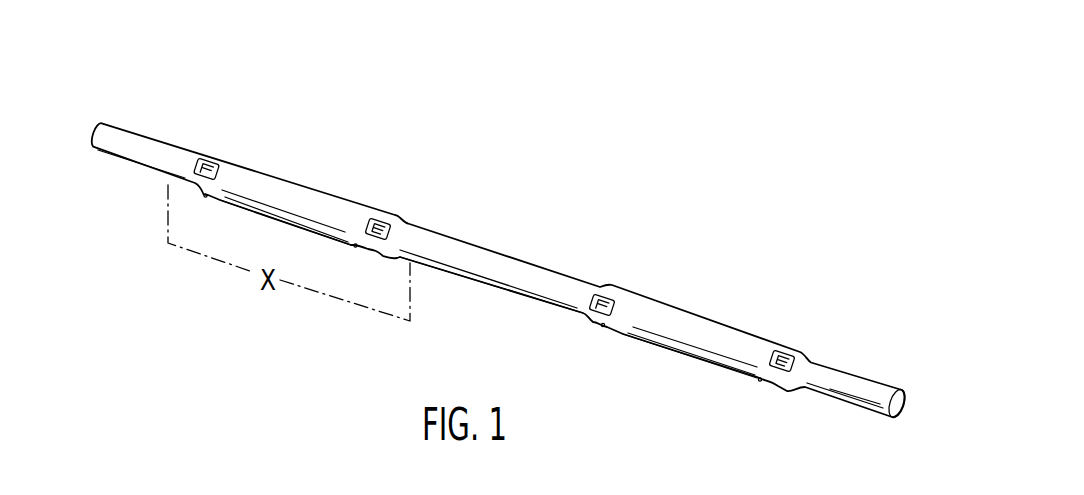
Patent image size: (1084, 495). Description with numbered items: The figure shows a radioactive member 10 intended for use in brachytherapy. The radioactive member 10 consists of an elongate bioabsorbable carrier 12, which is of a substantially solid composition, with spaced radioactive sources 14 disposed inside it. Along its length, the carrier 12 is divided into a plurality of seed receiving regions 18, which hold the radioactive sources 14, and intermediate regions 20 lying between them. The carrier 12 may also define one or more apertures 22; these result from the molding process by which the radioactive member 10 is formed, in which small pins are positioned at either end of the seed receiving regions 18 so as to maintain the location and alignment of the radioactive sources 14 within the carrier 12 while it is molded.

The radioactive member 10 is at (529, 186).
The elongate bioabsorbable carrier 12 is at (865, 377).
The radioactive sources 14 is at (783, 352).
The seed receiving regions 18 is at (325, 188).
The intermediate regions 20 is at (523, 270).
The apertures 22 is at (213, 158).